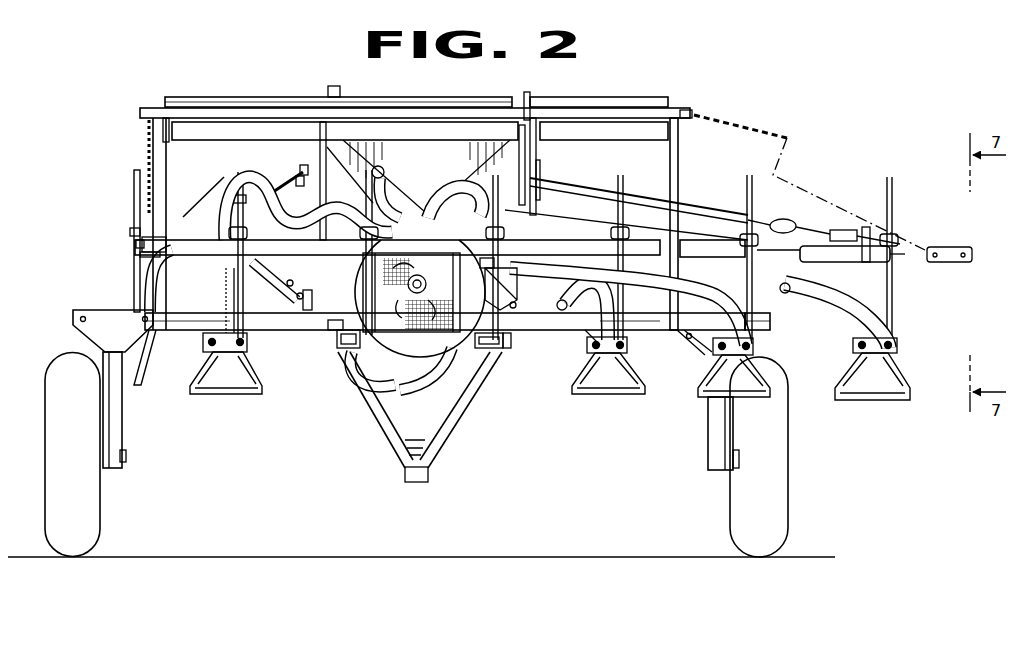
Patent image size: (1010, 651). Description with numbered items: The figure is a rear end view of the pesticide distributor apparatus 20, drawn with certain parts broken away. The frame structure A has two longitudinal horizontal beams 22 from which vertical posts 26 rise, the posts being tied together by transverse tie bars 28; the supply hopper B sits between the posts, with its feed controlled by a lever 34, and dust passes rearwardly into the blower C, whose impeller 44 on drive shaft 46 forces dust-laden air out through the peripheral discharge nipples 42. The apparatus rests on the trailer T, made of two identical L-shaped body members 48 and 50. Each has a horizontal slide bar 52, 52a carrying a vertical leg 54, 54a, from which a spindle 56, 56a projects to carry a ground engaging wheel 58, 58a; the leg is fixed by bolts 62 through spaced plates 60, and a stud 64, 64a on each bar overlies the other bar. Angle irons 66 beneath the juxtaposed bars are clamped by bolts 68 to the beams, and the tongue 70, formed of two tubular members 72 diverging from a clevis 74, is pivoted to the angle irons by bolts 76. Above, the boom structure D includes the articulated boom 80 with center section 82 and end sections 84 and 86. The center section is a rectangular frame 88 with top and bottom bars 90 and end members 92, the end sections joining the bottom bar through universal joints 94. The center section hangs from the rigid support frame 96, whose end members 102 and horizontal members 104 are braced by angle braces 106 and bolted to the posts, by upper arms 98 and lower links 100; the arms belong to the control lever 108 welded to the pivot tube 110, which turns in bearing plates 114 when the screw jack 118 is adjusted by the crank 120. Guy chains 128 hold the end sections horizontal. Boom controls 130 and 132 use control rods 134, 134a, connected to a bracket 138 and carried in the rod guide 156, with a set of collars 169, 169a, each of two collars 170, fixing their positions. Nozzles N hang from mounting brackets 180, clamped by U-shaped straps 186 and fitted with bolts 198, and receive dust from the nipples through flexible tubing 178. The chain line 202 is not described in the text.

The pesticide distributor apparatus 20 is at (812, 84).
The horizontal beams 22 is at (306, 292).
The posts 26 is at (318, 158).
The tie bars 28 is at (496, 270).
The lever 34 is at (342, 86).
The discharge nipples 42 is at (455, 216).
The impeller 44 is at (426, 283).
The drive shaft 46 is at (440, 295).
The trailer body member 48 is at (273, 328).
The trailer body member 50 is at (713, 344).
The slide bar 52 is at (630, 318).
The slide bar 52a is at (174, 313).
The vertical leg 54 is at (712, 442).
The vertical leg 54a is at (118, 440).
The spindle 56 is at (728, 460).
The spindle 56a is at (124, 458).
The ground engaging wheel 58 is at (774, 475).
The ground engaging wheel 58a is at (98, 487).
The spaced plates 60 is at (652, 332).
The bolts 62 is at (695, 318).
The stud 64 is at (290, 285).
The stud 64a is at (600, 327).
The angle iron 66 is at (345, 348).
The bolts 68 is at (318, 327).
The tongue 70 is at (388, 433).
The tubular members 72 is at (348, 404).
The clevis 74 is at (407, 483).
The bolt 76 is at (350, 356).
The articulated boom 80 is at (137, 247).
The center section 82 is at (165, 116).
The end section 84 is at (132, 240).
The end section 86 is at (780, 255).
The rectangular frame 88 is at (608, 117).
The bar 90 is at (246, 114).
The vertically extending members 92 is at (157, 137).
The universal joints 94 is at (140, 255).
The support frame 96 is at (263, 103).
The upper arms 98 is at (157, 117).
The lower links 100 is at (160, 242).
The end members 102 is at (172, 146).
The horizontal members 104 is at (253, 106).
The angle braces 106 is at (552, 277).
The control lever 108 is at (533, 124).
The pivot tube 110 is at (435, 140).
The bearing plates 114 is at (157, 125).
The screw jack 118 is at (604, 142).
The crank 120 is at (532, 100).
The guy chain 128 is at (147, 155).
The boom control 130 is at (282, 188).
The boom control 132 is at (737, 209).
The control rod 134 is at (587, 193).
The control rod 134a is at (233, 232).
The bracket 138 is at (867, 230).
The rod guide 156 is at (540, 172).
The set of collars 169 is at (778, 216).
The set of collars 169a is at (298, 188).
The collars 170 is at (837, 237).
The flexible tubing 178 is at (450, 192).
The mounting brackets 180 is at (132, 190).
The U-shaped strap 186 is at (397, 247).
The bolt 198 is at (130, 230).
The chain line 202 is at (134, 172).
The frame structure A is at (316, 160).
The supply hopper B is at (438, 95).
The blower C is at (468, 352).
The boom structure D is at (682, 183).
The nozzles N is at (213, 395).
The trailer T is at (450, 452).